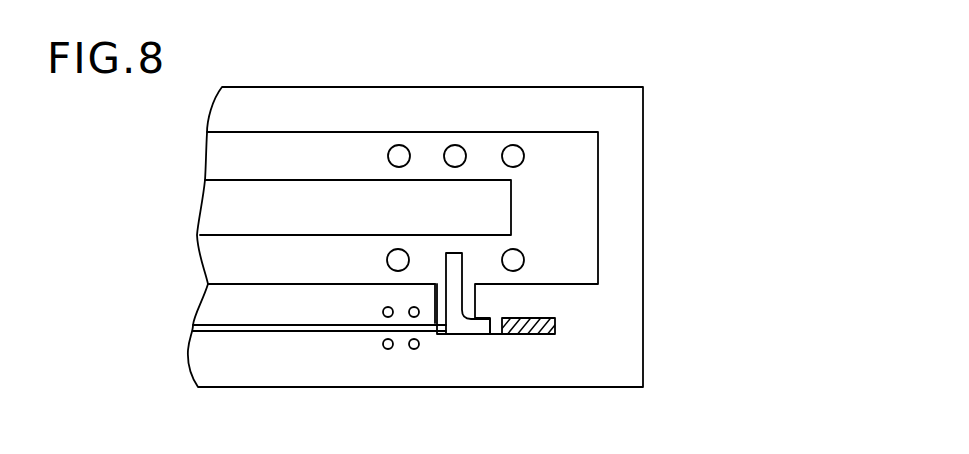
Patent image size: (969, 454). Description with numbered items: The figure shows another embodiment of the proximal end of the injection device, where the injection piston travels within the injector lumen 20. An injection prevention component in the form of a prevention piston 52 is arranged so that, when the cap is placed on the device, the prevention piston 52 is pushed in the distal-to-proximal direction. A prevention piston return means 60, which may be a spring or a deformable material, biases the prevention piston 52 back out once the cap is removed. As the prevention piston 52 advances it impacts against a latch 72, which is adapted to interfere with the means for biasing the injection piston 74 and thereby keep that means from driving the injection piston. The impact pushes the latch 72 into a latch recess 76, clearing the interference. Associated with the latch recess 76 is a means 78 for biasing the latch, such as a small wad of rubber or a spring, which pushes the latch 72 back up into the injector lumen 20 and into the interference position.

The injector lumen 20 is at (567, 163).
The prevention piston 52 is at (252, 330).
The prevention piston return means 60 is at (414, 349).
The latch 72 is at (460, 262).
The means for biasing the injection piston 74 is at (513, 150).
The latch recess 76 is at (497, 336).
The means for biasing the latch 78 is at (557, 325).